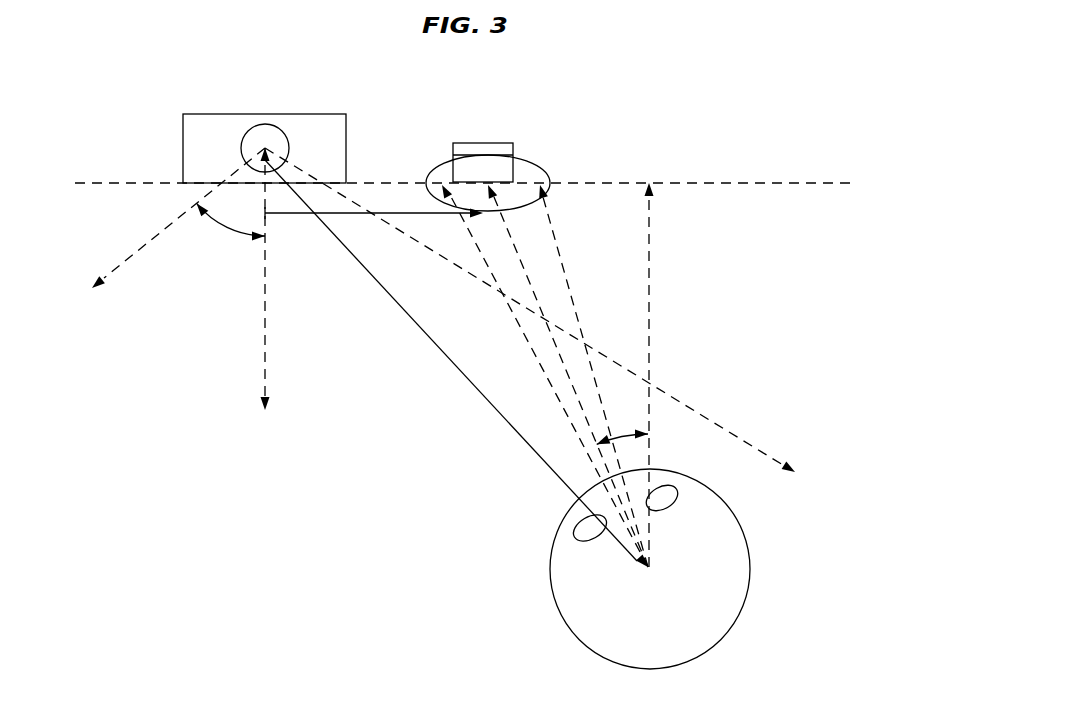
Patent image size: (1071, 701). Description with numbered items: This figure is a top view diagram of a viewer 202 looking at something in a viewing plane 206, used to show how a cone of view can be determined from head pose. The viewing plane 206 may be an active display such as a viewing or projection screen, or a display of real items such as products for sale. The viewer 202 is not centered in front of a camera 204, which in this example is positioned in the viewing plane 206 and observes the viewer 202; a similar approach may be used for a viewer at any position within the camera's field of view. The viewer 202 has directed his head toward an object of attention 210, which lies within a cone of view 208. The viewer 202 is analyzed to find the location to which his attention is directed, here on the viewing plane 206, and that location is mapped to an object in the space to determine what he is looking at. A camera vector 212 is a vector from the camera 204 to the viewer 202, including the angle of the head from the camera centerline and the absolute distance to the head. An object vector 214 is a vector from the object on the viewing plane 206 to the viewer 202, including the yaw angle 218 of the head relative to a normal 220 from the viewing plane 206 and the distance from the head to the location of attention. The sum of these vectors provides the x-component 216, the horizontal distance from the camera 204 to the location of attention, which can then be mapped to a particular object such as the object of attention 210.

The viewer 202 is at (752, 553).
The camera 204 is at (227, 113).
The viewing plane 206 is at (805, 182).
The cone of view 208 is at (535, 163).
The object of attention 210 is at (493, 142).
The camera vector 212 is at (432, 333).
The object vector 214 is at (537, 295).
The x-component 216 is at (383, 215).
The yaw angle 218 is at (650, 447).
The normal 220 is at (650, 325).